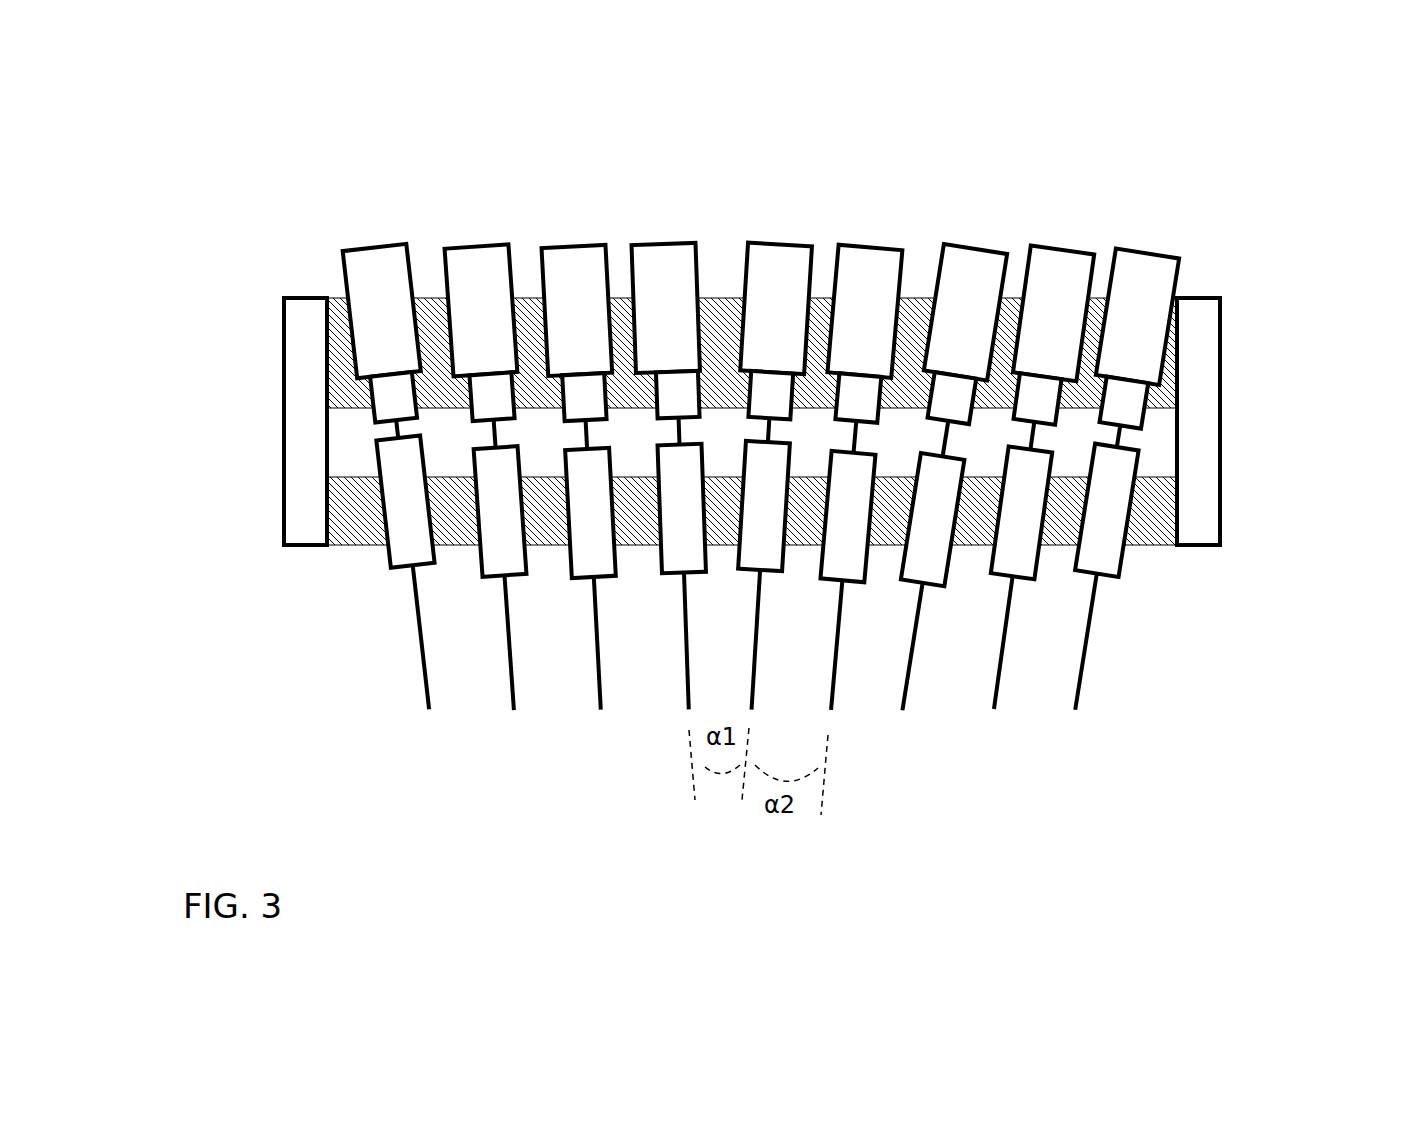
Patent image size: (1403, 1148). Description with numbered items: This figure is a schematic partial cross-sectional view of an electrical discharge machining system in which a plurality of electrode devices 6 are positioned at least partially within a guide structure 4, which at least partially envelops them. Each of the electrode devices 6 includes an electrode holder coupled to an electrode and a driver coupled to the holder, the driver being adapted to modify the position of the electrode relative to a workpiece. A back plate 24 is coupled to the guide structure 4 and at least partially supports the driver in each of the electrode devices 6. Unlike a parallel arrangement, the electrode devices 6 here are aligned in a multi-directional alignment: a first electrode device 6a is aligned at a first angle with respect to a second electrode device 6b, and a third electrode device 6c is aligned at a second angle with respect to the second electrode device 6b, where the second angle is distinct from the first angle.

The guide structure 4 is at (1250, 387).
The electrode devices 6 is at (749, 428).
The first electrode device 6a is at (648, 215).
The second electrode device 6b is at (699, 430).
The third electrode device 6c is at (866, 217).
The back plate 24 is at (393, 397).